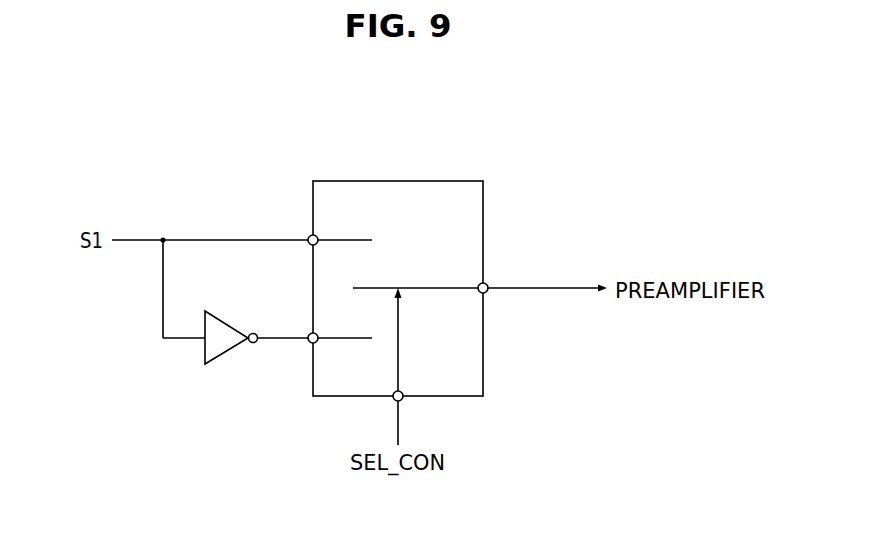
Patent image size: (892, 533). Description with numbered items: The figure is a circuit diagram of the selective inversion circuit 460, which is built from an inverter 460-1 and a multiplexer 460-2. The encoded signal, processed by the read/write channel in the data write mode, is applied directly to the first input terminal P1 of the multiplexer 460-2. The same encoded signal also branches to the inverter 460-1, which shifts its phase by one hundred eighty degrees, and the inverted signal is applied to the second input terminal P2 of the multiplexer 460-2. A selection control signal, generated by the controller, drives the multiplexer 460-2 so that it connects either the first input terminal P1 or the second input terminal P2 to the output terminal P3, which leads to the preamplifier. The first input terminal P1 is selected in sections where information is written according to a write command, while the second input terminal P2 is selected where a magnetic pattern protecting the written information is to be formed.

The selective inversion circuit 460 is at (545, 160).
The inverter 460-1 is at (226, 352).
The multiplexer 460-2 is at (398, 181).
The first input terminal P1 is at (300, 254).
The second input terminal P2 is at (299, 351).
The output terminal P3 is at (497, 302).